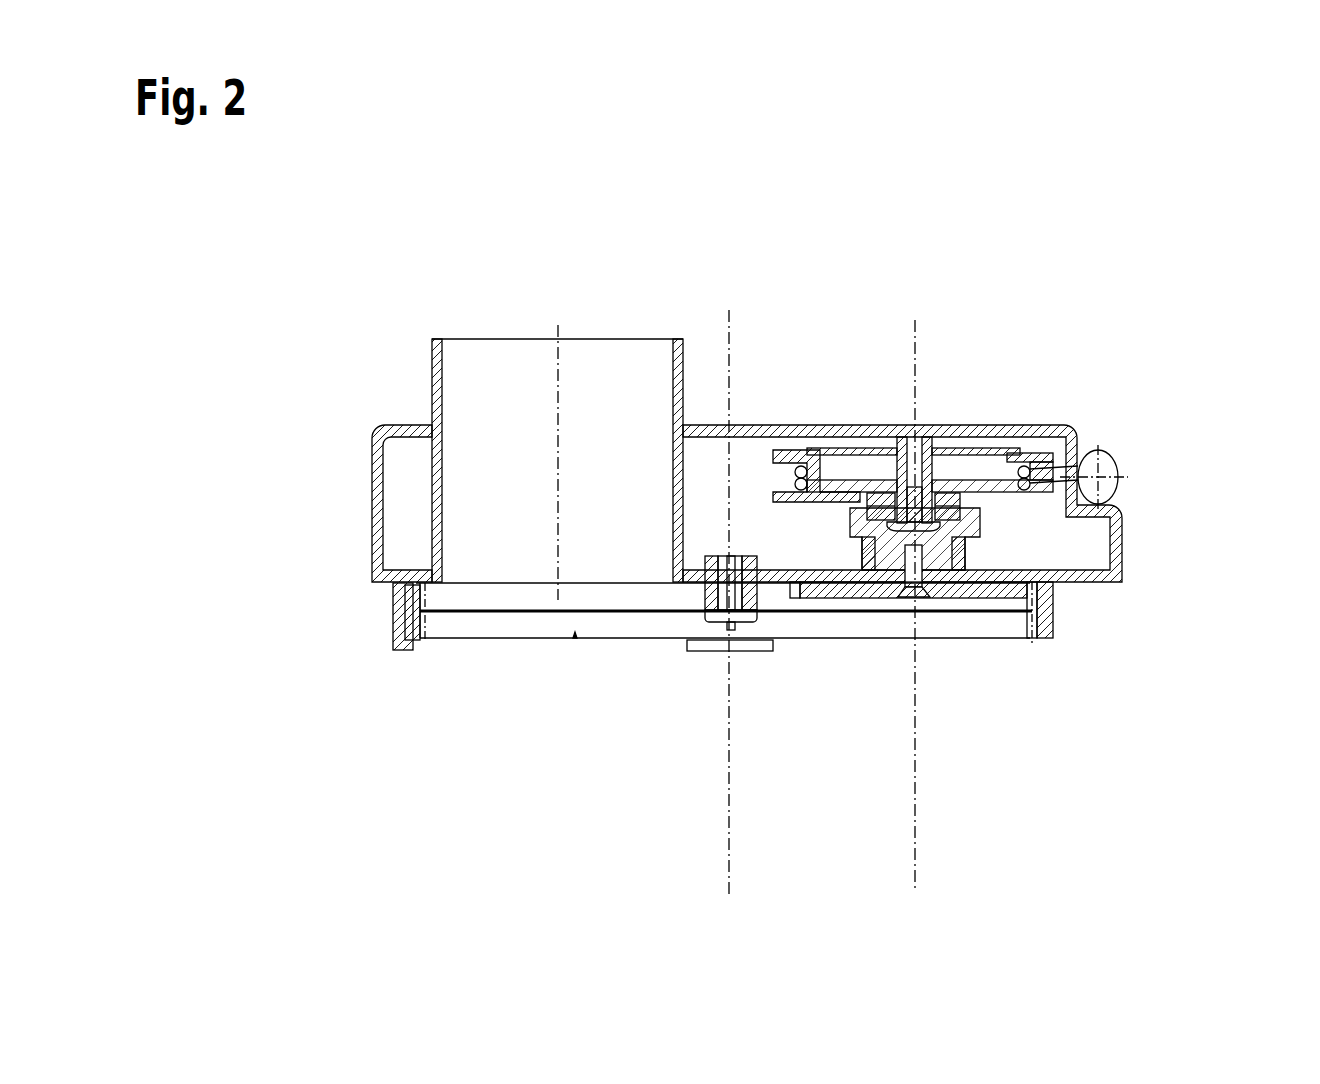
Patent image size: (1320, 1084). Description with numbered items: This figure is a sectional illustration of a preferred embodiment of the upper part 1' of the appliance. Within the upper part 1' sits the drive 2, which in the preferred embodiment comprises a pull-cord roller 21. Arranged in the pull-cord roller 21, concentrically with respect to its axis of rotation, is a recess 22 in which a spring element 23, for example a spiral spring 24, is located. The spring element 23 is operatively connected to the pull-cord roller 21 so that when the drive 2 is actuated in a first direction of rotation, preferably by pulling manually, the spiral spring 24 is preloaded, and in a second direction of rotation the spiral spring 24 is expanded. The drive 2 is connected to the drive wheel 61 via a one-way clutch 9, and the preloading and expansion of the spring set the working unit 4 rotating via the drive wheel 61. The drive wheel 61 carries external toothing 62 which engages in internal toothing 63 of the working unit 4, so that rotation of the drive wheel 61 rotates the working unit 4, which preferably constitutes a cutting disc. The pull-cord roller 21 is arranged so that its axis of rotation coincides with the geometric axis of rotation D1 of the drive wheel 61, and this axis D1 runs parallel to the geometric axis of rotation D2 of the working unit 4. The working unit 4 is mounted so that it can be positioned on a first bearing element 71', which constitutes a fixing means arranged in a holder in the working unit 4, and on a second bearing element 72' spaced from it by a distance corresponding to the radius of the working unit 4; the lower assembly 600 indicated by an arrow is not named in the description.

The upper part 1' is at (686, 442).
The drive 2 is at (1120, 399).
The working unit 4 is at (533, 618).
The one-way clutch 9 is at (955, 493).
The pull-cord roller 21 is at (772, 450).
The recess 22 is at (850, 460).
The spring element 23 is at (930, 419).
The spiral spring 24 is at (974, 386).
The drive wheel 61 is at (980, 584).
The external toothing 62 is at (825, 699).
The internal toothing 63 is at (1132, 593).
The first bearing element 71' is at (710, 673).
The second bearing element 72' is at (308, 649).
The base assembly 600 is at (1077, 607).
The geometric axis of rotation of the drive wheel D1 is at (947, 618).
The geometric axis of rotation of the working unit D2 is at (756, 613).